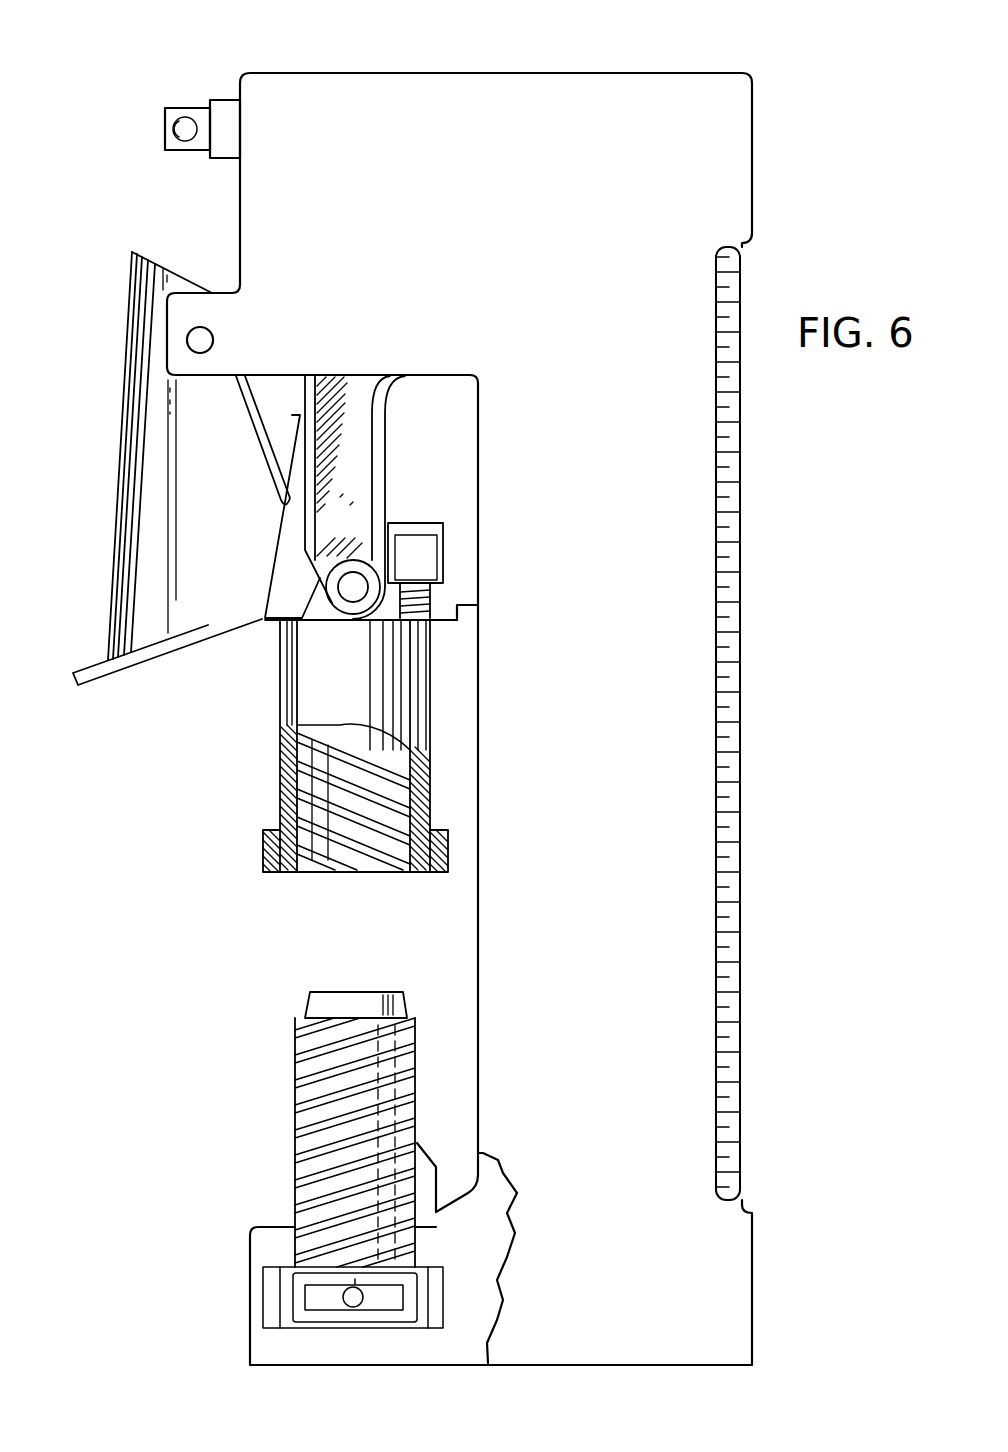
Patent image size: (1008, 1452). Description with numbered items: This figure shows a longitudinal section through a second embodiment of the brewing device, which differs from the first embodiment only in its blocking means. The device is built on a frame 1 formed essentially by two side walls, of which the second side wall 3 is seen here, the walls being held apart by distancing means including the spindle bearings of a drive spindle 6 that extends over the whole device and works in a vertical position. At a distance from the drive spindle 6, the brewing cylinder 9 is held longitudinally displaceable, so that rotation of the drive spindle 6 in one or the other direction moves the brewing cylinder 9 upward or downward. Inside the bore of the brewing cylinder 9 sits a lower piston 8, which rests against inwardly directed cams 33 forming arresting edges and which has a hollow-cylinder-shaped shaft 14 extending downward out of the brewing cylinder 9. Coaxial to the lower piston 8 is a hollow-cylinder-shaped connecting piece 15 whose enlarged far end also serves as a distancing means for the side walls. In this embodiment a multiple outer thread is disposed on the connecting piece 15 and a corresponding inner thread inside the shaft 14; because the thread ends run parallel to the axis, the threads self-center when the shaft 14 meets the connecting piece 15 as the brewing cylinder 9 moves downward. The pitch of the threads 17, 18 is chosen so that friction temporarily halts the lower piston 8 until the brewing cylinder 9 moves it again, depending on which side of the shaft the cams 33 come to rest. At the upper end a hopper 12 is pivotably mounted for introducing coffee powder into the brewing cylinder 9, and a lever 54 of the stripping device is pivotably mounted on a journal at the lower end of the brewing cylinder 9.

The frame 1 is at (359, 68).
The second side wall 3 is at (538, 105).
The drive spindle 6 is at (744, 562).
The lower piston 8 is at (290, 797).
The brewing cylinder 9 is at (233, 538).
The hopper 12 is at (150, 430).
The shaft 14 is at (280, 778).
The connecting piece 15 is at (307, 1129).
The thread 17 is at (297, 1112).
The thread 18 is at (355, 872).
The cam 33 is at (447, 608).
The lever 54 is at (300, 600).